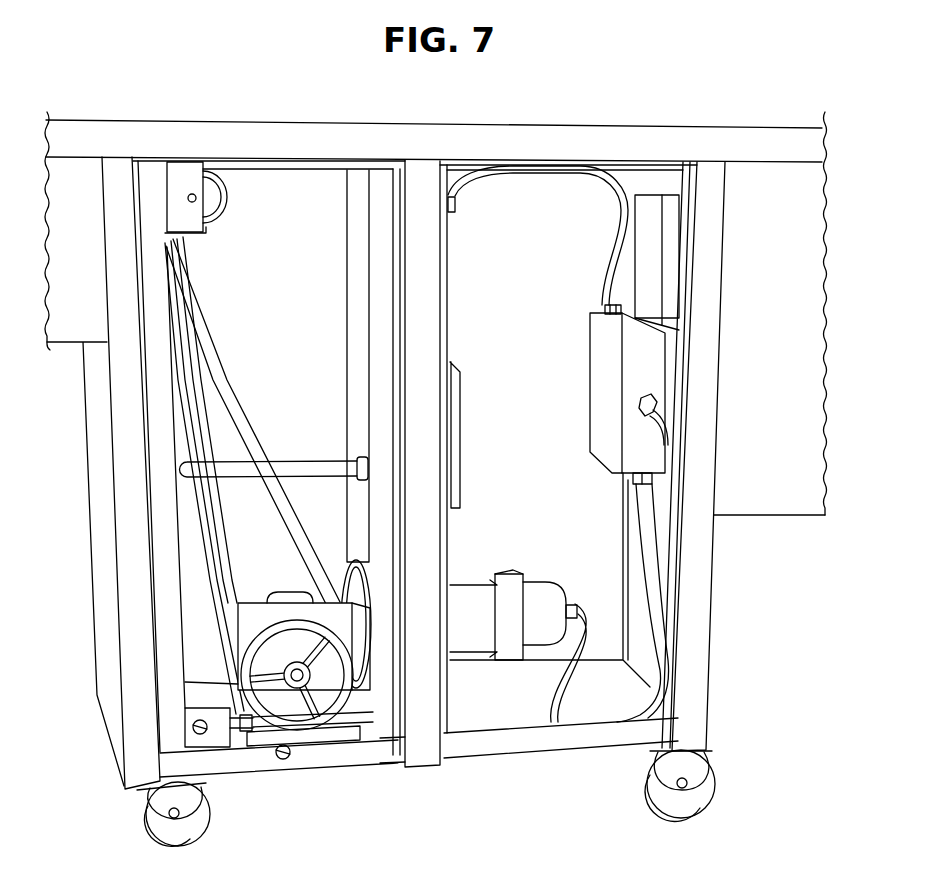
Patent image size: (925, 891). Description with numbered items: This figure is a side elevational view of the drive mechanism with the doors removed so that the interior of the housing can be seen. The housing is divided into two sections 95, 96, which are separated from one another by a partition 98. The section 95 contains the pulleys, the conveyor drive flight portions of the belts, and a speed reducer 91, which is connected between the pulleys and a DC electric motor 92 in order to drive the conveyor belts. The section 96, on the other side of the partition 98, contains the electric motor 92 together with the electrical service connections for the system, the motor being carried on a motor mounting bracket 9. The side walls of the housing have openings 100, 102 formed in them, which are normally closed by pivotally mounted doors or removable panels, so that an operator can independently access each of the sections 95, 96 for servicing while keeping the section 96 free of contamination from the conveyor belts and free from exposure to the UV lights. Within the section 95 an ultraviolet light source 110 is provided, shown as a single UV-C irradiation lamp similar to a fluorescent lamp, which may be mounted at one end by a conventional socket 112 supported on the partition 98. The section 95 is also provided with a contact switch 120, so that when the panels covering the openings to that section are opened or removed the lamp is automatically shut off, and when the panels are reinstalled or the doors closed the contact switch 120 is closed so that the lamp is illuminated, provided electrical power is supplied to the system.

The motor mounting bracket 9 is at (508, 570).
The speed reducer 91 is at (343, 568).
The DC electric motor 92 is at (550, 582).
The section 95 is at (309, 307).
The section 96 is at (546, 378).
The partition 98 is at (415, 168).
The opening 100 is at (252, 158).
The opening 102 is at (478, 162).
The ultraviolet light source 110 is at (285, 462).
The socket 112 is at (347, 477).
The contact switch 120 is at (305, 755).